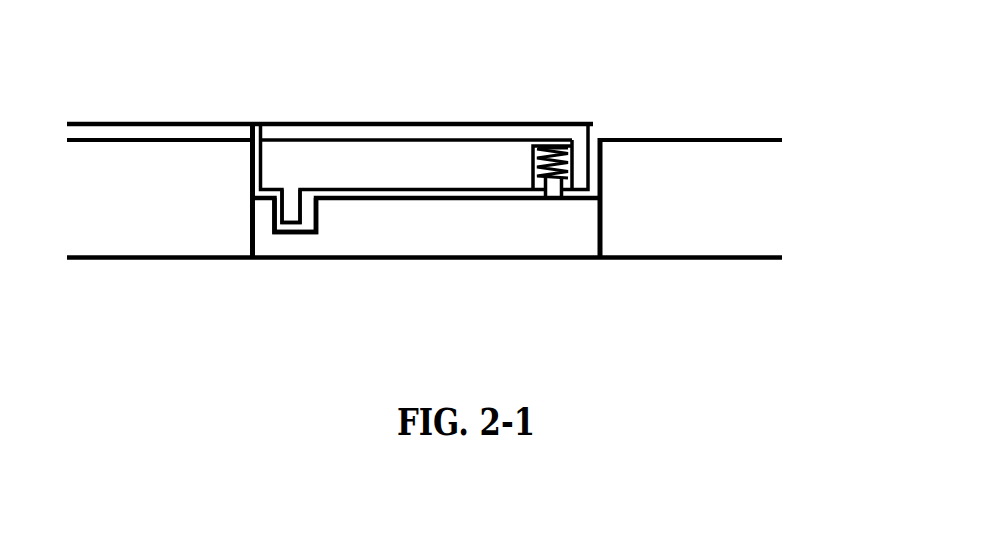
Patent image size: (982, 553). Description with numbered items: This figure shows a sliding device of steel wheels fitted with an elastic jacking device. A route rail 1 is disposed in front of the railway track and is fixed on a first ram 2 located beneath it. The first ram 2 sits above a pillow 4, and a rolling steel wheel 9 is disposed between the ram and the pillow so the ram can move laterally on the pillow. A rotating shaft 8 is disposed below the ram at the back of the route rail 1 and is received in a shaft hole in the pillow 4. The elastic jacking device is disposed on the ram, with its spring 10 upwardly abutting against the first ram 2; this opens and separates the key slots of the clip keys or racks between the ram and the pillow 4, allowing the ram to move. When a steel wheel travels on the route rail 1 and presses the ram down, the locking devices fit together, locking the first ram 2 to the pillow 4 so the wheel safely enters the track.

The route rail 1 is at (328, 130).
The first ram 2 is at (402, 160).
The pillow 4 is at (482, 220).
The rotating shaft 8 is at (295, 207).
The rolling steel wheel 9 is at (535, 153).
The spring 10 is at (565, 151).